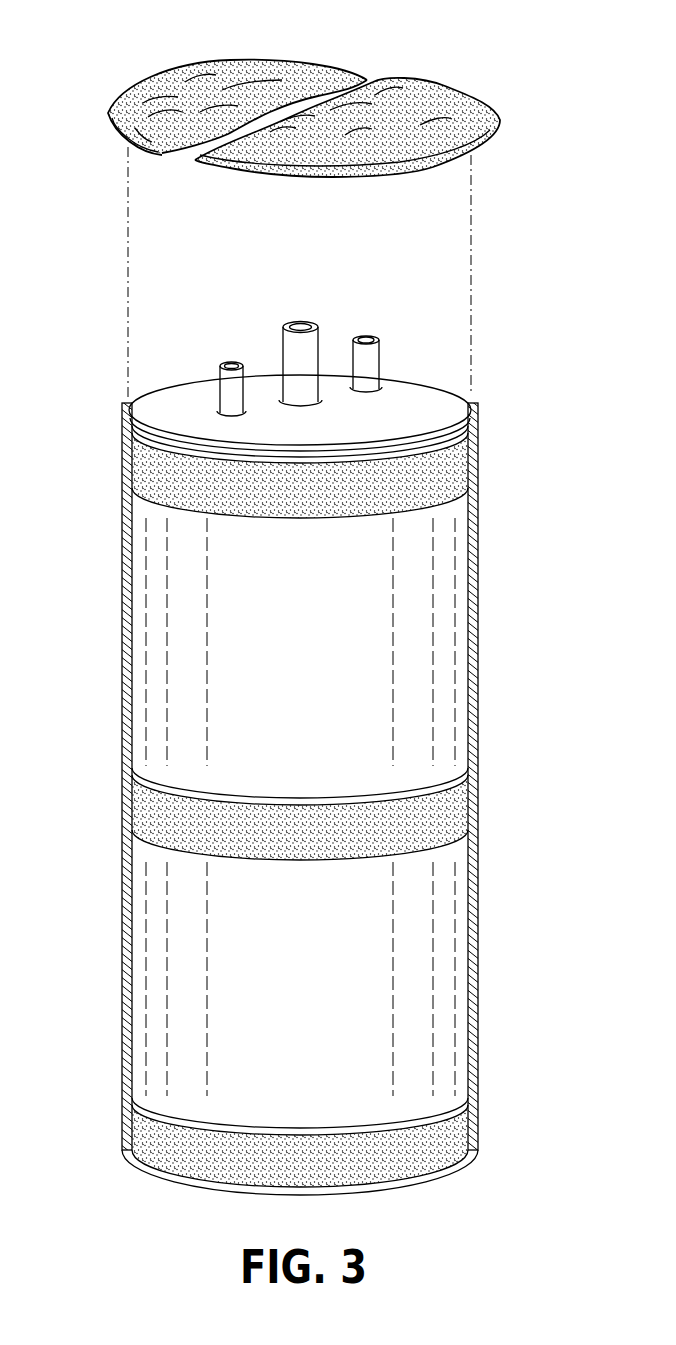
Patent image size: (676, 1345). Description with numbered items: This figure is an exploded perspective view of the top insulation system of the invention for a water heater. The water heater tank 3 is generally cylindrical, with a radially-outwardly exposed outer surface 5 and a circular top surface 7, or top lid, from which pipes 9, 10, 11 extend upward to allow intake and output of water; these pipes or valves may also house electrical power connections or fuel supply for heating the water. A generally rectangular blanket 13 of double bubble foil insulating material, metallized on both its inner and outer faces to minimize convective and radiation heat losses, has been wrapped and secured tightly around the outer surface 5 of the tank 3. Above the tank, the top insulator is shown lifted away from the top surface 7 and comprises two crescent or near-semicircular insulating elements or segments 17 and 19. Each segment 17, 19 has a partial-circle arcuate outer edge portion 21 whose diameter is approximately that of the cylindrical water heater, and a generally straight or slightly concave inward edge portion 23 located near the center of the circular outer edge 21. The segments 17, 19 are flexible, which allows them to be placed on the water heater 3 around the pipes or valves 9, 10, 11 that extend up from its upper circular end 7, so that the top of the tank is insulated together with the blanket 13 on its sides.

The water heater tank 3 is at (403, 677).
The outer surface 5 is at (428, 572).
The top surface 7 is at (177, 400).
The pipe 9 is at (232, 360).
The pipe 10 is at (300, 322).
The pipe 11 is at (370, 338).
The blanket 13 is at (125, 600).
The insulating segment 17 is at (263, 78).
The insulating segment 19 is at (430, 110).
The arcuate outer edge portion 21 is at (157, 90).
The inward edge portion 23 is at (373, 82).